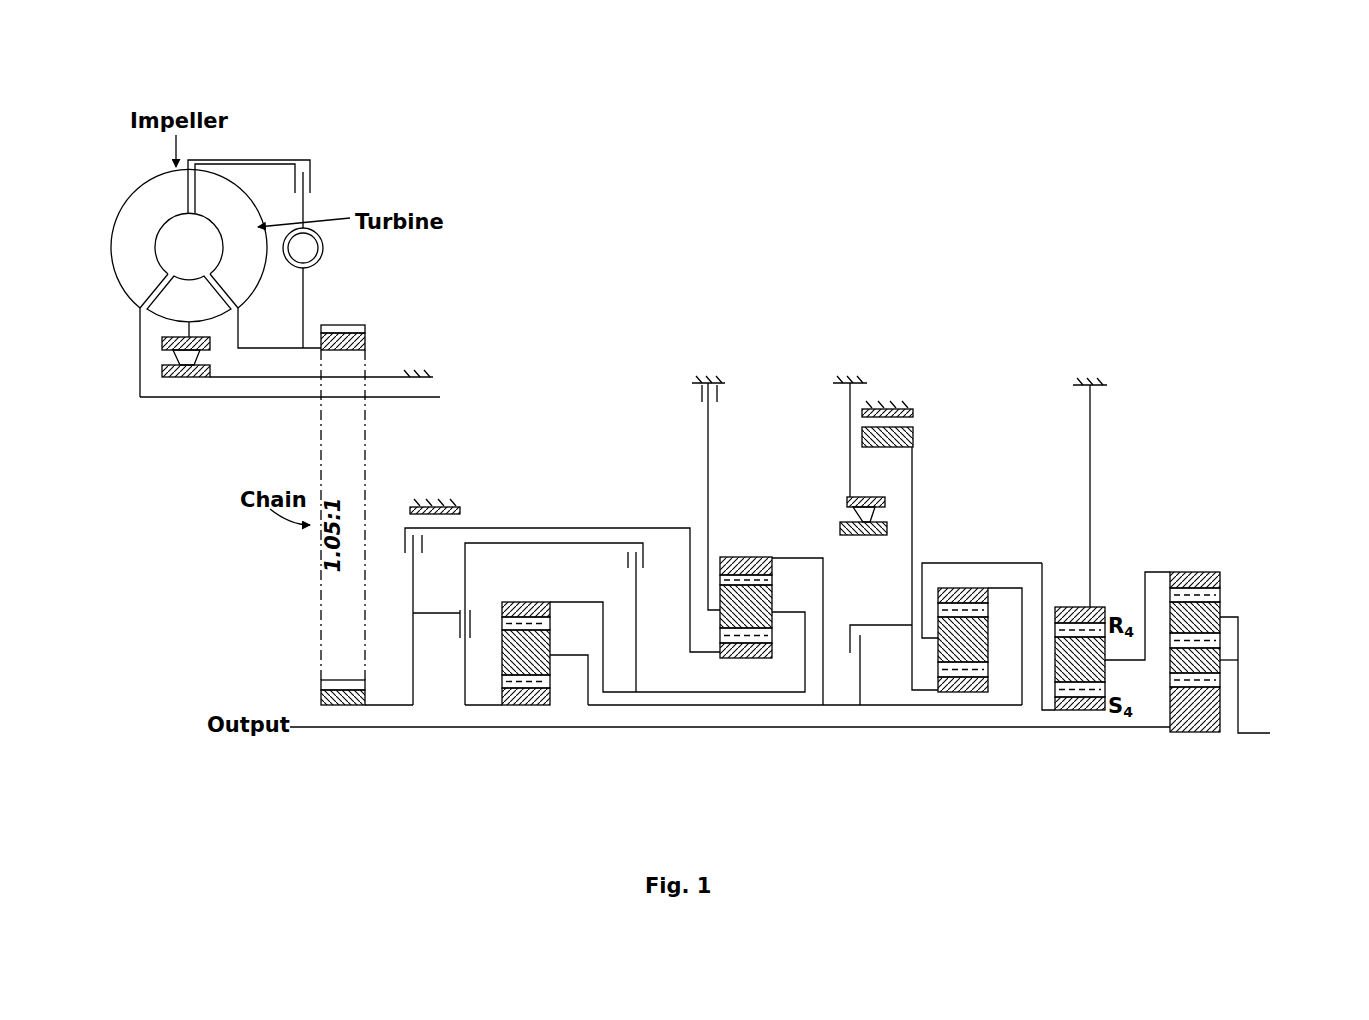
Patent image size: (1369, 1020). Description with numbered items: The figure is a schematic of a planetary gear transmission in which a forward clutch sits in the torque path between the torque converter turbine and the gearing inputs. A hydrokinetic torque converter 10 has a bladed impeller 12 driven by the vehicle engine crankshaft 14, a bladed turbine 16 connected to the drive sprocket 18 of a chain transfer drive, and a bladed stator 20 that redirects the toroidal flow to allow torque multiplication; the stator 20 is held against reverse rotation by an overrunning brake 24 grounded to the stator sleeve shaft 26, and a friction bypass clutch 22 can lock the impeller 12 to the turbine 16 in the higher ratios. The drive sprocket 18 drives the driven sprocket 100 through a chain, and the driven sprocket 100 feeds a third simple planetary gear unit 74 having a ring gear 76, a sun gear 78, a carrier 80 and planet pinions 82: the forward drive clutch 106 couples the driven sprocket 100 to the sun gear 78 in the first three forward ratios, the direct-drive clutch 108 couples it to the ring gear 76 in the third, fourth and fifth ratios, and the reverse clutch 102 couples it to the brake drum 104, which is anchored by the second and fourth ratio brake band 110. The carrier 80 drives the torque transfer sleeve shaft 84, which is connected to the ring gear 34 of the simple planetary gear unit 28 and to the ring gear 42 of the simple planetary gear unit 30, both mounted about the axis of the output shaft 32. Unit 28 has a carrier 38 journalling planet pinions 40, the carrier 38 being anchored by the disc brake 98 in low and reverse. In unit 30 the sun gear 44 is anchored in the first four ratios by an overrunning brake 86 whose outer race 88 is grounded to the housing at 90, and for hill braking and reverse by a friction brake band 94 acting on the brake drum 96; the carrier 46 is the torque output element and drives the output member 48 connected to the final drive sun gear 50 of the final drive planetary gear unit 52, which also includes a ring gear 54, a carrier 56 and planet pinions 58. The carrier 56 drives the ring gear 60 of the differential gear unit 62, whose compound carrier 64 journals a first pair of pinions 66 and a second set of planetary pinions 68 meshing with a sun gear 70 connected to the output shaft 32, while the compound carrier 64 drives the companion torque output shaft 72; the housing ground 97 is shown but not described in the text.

The hydrokinetic torque converter 10 is at (139, 190).
The bladed impeller 12 is at (141, 271).
The vehicle engine crankshaft 14 is at (390, 402).
The bladed turbine 16 is at (251, 271).
The drive sprocket 18 is at (343, 325).
The bladed stator 20 is at (198, 311).
The friction bypass clutch 22 is at (312, 165).
The overrunning brake 24 is at (187, 357).
The stator sleeve shaft 26 is at (387, 377).
The simple planetary gear unit 28 is at (730, 633).
The simple planetary gear unit 30 is at (987, 631).
The output shaft 32 is at (733, 660).
The ring gear 34 is at (735, 557).
The carrier 38 is at (708, 447).
The planet pinions 40 is at (737, 610).
The ring gear 42 is at (975, 588).
The sun gear 44 is at (955, 692).
The carrier 46 is at (918, 567).
The output member 48 is at (1043, 575).
The final drive sun gear 50 is at (1090, 707).
The final drive planetary gear unit 52 is at (1093, 604).
The ring gear 54 is at (1100, 608).
The carrier 56 is at (1120, 662).
The planet pinions 58 is at (1073, 668).
The ring gear 60 is at (1192, 573).
The differential gear unit 62 is at (1224, 592).
The compound carrier 64 is at (1240, 625).
The first pair of pinions 66 is at (1168, 680).
The second set of planetary pinions 68 is at (1220, 608).
The sun gear 70 is at (1185, 723).
The companion torque output shaft 72 is at (1253, 732).
The third simple planetary gear unit 74 is at (502, 661).
The ring gear 76 is at (540, 606).
The sun gear 78 is at (525, 705).
The carrier 80 is at (579, 653).
The planet pinions 82 is at (515, 656).
The torque transfer sleeve shaft 84 is at (605, 705).
The overrunning brake 86 is at (873, 512).
The outer race 88 is at (848, 497).
The transmission housing ground 90 is at (867, 383).
The friction brake band 94 is at (902, 409).
The brake drum 96 is at (885, 447).
The housing ground shaft 97 is at (1090, 410).
The disc brake 98 is at (700, 387).
The driven sprocket 100 is at (328, 682).
The reverse clutch 102 is at (533, 624).
The brake drum 104 is at (570, 528).
The forward drive clutch 106 is at (473, 622).
The direct-drive clutch 108 is at (628, 550).
The brake band 110 is at (453, 510).